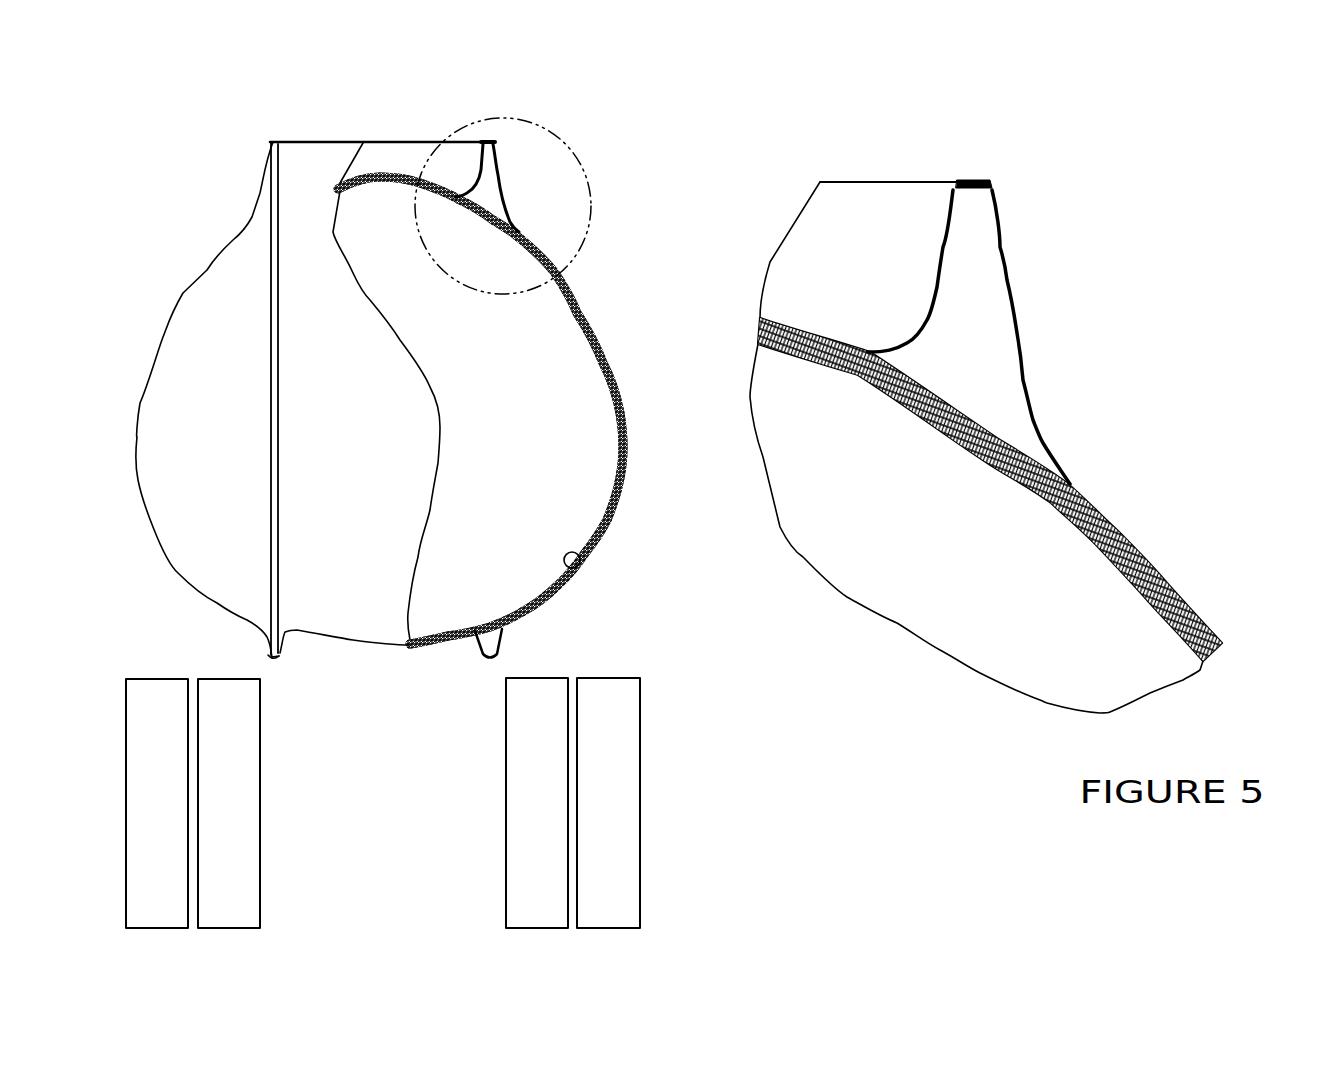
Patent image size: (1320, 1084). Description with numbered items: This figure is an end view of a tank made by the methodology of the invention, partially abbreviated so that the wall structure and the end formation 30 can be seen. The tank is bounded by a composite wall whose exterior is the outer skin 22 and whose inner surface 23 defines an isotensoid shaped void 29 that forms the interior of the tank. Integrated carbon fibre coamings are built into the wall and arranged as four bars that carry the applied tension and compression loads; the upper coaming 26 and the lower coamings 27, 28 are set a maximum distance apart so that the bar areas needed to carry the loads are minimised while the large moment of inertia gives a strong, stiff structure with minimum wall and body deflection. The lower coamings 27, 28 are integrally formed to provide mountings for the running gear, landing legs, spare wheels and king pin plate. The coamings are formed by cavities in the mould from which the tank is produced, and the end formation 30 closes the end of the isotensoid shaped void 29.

The outer skin 22 is at (628, 313).
The inner surface 23 is at (583, 573).
The integrated carbon fibre coaming 26 is at (272, 140).
The lower coaming 27 is at (280, 659).
The lower coaming 28 is at (498, 640).
The isotensoid shaped void 29 is at (1055, 555).
The end formation 30 is at (203, 308).